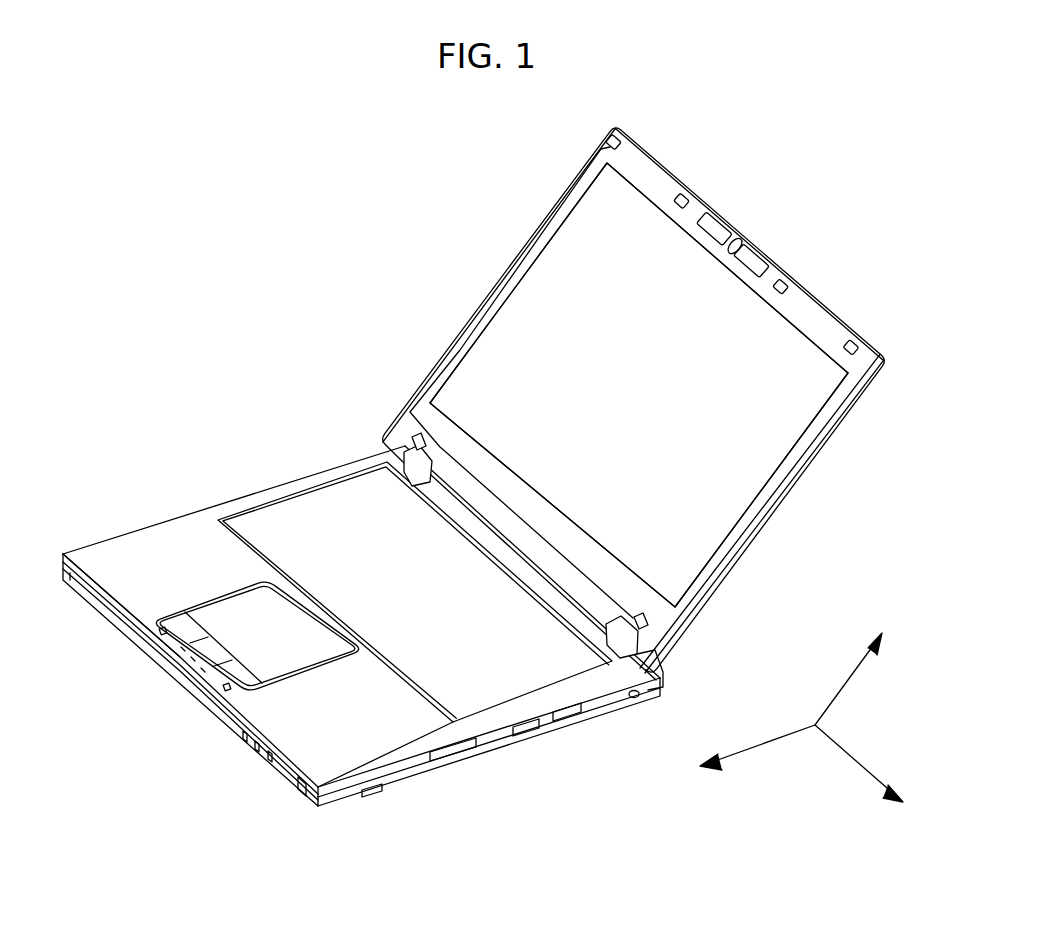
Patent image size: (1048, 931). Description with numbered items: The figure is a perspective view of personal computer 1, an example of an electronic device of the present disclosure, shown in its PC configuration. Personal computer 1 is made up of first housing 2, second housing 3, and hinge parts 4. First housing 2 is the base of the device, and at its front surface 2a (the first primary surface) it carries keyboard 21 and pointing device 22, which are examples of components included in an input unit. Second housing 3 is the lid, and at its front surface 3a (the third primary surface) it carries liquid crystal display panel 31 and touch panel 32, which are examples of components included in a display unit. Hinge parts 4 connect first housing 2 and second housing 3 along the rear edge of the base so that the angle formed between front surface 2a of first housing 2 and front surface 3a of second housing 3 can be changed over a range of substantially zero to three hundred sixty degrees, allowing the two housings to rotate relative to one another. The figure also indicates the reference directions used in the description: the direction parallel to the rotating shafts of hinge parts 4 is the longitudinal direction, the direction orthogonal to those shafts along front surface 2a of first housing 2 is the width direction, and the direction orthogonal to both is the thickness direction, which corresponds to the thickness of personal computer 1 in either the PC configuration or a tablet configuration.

The personal computer 1 is at (301, 280).
The first housing 2 is at (194, 478).
The front surface 2a is at (385, 738).
The keyboard 21 is at (323, 530).
The pointing device 22 is at (235, 622).
The second housing 3 is at (498, 230).
The front surface 3a is at (815, 422).
The liquid crystal display panel 31 is at (514, 360).
The touch panel 32 is at (639, 385).
The hinge parts 4 is at (392, 455).